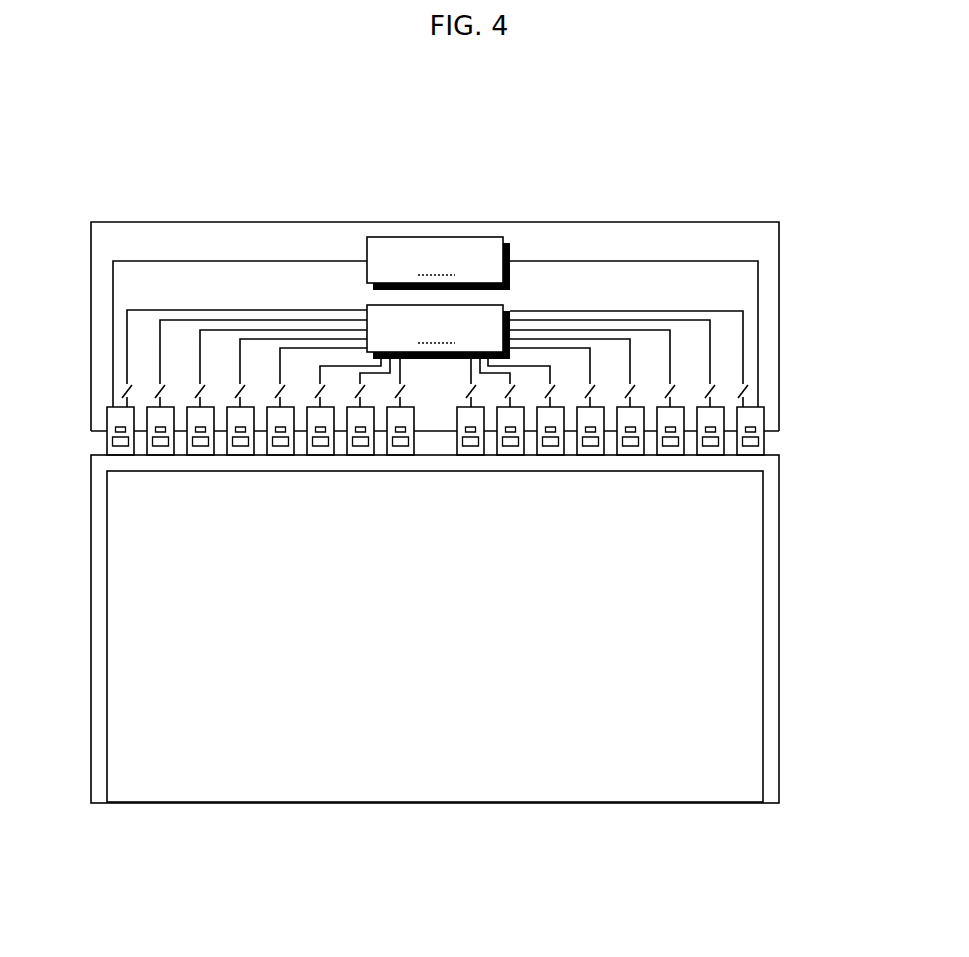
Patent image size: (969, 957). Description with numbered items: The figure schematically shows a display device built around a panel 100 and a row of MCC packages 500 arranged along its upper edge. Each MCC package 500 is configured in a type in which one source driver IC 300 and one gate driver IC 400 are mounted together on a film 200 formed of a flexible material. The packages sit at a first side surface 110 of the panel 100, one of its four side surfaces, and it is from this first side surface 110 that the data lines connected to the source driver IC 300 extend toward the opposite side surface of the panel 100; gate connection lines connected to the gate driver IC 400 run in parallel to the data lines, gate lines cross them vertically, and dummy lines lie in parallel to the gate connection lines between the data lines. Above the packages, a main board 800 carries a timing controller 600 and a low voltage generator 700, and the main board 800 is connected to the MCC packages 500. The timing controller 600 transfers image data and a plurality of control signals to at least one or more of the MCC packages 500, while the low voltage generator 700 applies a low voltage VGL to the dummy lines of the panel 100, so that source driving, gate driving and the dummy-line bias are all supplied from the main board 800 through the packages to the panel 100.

The panel 100 is at (780, 527).
The first side surface 110 is at (123, 462).
The film 200 is at (764, 440).
The source driver IC 300 is at (751, 423).
The gate driver IC 400 is at (752, 445).
The MCC package 500 is at (503, 424).
The timing controller 600 is at (435, 356).
The low voltage generator 700 is at (435, 322).
The main board 800 is at (780, 305).